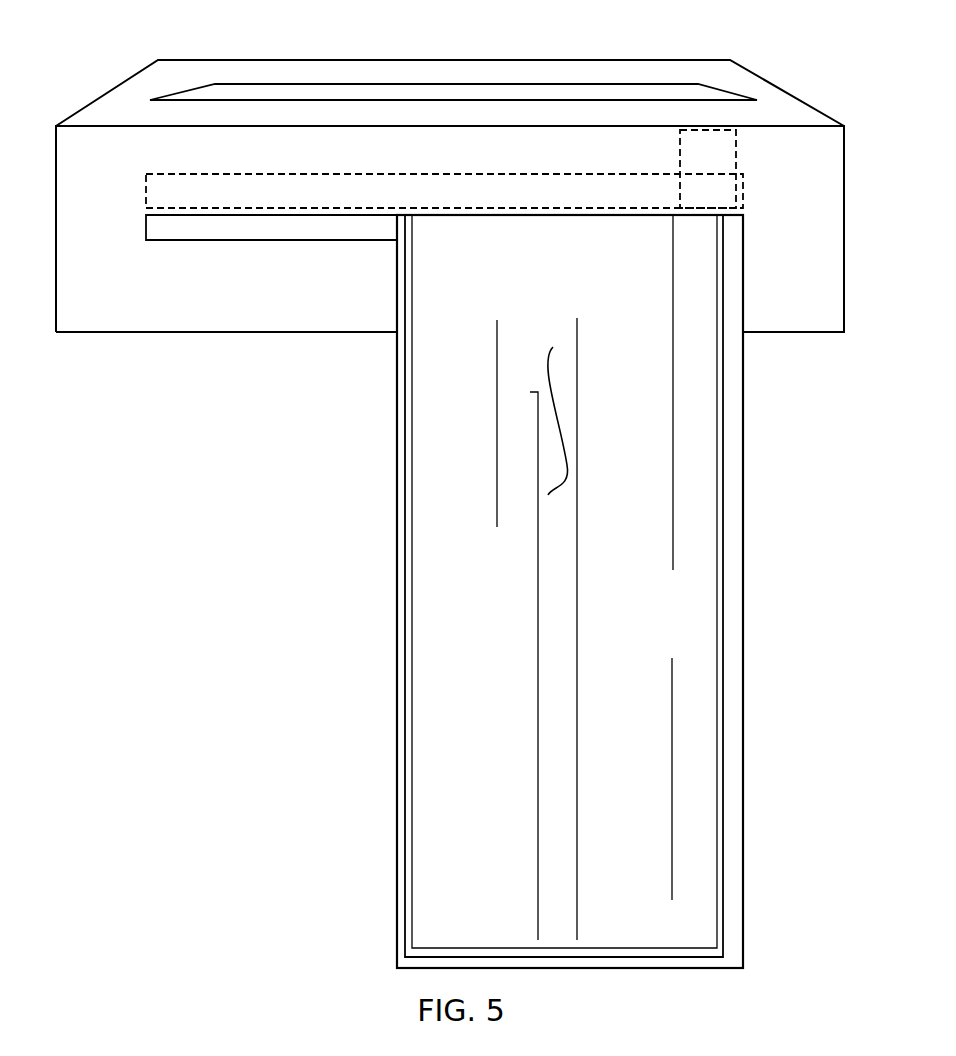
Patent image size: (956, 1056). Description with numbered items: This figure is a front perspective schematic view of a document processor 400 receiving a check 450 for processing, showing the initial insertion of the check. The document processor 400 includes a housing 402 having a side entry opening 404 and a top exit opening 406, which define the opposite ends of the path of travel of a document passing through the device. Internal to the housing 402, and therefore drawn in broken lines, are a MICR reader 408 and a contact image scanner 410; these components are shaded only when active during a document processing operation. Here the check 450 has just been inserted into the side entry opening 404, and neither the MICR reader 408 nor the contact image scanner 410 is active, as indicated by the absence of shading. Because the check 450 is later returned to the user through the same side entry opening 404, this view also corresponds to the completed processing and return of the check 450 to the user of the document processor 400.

The document processor 400 is at (186, 406).
The housing 402 is at (125, 332).
The side entry opening 404 is at (305, 230).
The top exit opening 406 is at (285, 88).
The MICR reader 408 is at (730, 165).
The contact image scanner 410 is at (173, 183).
The check 450 is at (377, 856).